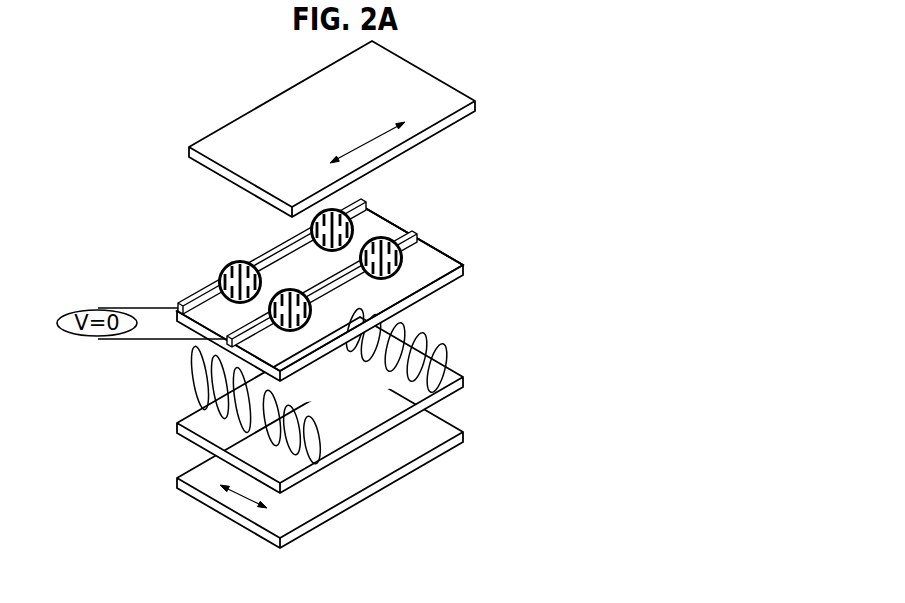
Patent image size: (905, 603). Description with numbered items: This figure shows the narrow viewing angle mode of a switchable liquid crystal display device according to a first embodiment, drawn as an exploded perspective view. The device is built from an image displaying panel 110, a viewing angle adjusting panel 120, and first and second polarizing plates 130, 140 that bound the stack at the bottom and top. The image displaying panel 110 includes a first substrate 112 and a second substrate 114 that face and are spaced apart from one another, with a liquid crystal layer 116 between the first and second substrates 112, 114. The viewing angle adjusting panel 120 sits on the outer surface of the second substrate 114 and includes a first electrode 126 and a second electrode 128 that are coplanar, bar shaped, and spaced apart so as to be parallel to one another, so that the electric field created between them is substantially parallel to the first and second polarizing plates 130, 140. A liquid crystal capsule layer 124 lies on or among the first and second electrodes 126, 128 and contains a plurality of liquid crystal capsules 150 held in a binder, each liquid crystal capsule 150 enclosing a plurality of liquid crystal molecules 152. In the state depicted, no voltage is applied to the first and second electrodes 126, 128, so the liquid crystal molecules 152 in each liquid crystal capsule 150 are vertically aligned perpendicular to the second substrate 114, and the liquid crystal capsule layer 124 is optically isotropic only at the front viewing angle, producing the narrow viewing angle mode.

The second polarizing plate 140 is at (476, 104).
The first polarizing plate 130 is at (463, 434).
The image displaying panel 110 is at (410, 349).
The second substrate 114 is at (464, 274).
The liquid crystal layer 116 is at (487, 336).
The first substrate 112 is at (463, 380).
The viewing angle adjusting panel 120 is at (396, 256).
The first electrode 126 is at (365, 201).
The liquid crystal capsule layer 124 is at (443, 208).
The second electrode 128 is at (416, 226).
The liquid crystal capsule 150 is at (403, 244).
The liquid crystal molecule 152 is at (464, 261).